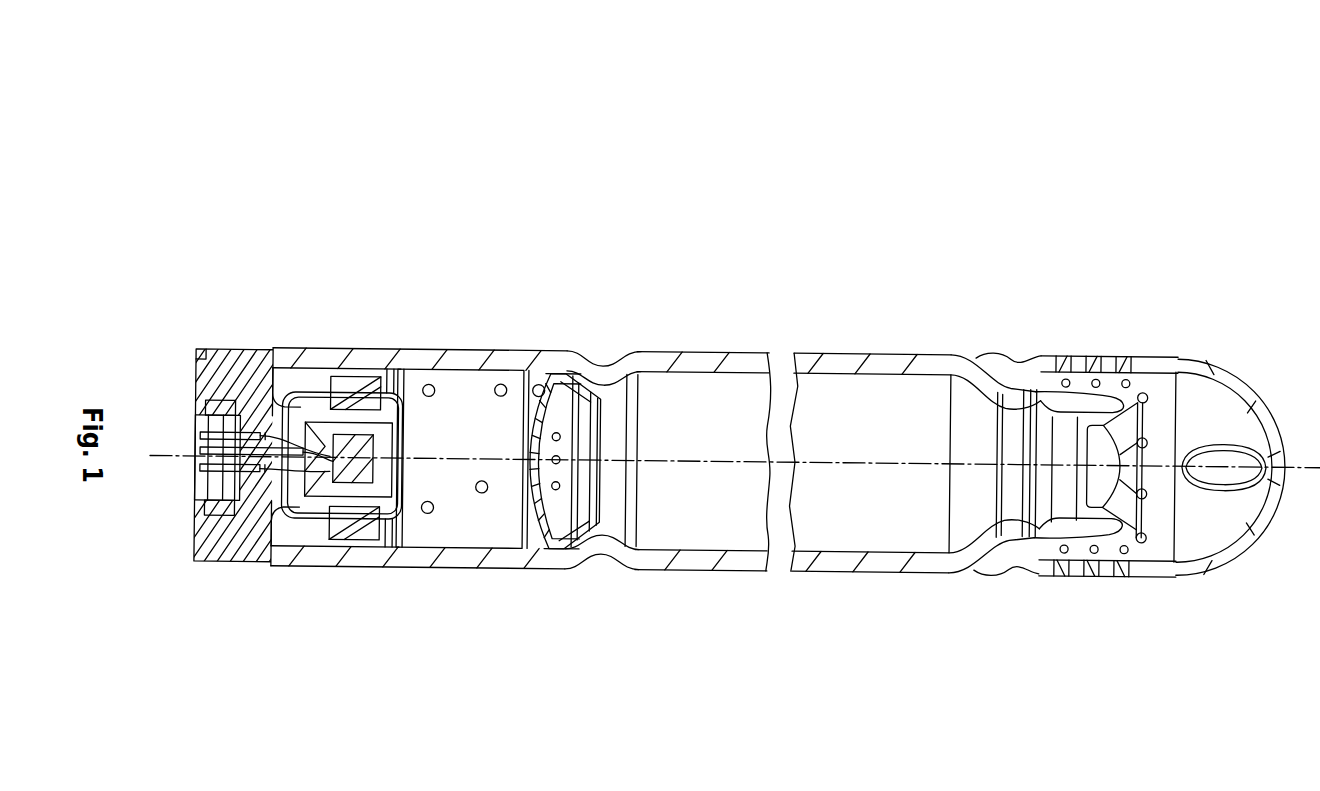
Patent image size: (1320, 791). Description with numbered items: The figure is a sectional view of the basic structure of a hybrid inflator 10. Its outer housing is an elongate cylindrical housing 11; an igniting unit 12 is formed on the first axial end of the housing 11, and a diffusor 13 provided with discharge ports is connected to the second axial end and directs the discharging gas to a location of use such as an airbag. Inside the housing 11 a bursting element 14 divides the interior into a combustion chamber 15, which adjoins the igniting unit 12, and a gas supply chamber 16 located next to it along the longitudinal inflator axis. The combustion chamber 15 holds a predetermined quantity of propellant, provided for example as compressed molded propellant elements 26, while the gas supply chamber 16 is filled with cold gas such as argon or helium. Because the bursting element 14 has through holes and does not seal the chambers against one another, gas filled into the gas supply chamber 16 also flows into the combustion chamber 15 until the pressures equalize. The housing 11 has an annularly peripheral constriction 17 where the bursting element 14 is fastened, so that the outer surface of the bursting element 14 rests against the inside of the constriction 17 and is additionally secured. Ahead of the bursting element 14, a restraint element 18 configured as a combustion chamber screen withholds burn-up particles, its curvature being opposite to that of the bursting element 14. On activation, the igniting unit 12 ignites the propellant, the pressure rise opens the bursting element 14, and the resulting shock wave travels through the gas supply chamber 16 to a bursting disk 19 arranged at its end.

The hybrid inflator 10 is at (588, 193).
The housing 11 is at (891, 356).
The igniting unit 12 is at (257, 352).
The diffusor 13 is at (1205, 575).
The bursting element 14 is at (600, 532).
The combustion chamber 15 is at (455, 530).
The gas supply chamber 16 is at (715, 535).
The constriction 17 is at (598, 348).
The restraint element 18 is at (534, 530).
The bursting disk 19 is at (1138, 400).
The propellant elements 26 is at (430, 382).